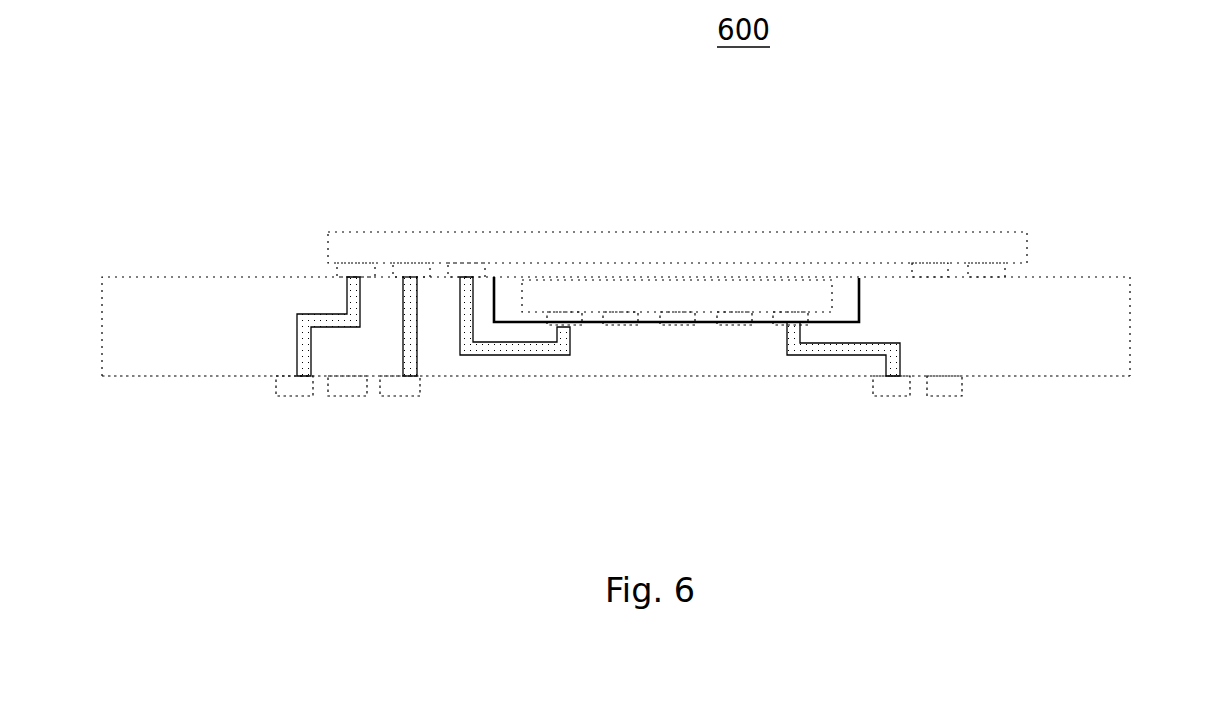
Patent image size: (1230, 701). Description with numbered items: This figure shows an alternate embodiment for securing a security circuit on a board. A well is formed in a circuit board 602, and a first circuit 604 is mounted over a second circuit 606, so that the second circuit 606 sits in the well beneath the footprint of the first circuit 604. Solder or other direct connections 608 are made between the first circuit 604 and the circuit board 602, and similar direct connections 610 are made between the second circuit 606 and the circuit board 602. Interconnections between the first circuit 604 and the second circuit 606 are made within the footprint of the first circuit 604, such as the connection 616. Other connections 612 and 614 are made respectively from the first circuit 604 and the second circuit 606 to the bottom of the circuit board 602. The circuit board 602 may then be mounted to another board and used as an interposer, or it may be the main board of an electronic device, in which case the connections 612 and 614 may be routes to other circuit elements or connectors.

The circuit board 602 is at (1130, 363).
The first circuit 604 is at (775, 233).
The second circuit 606 is at (653, 280).
The direct connections 608 is at (1003, 276).
The direct connections 610 is at (680, 324).
The connection 612 is at (293, 337).
The connection 614 is at (788, 357).
The connection 616 is at (500, 356).